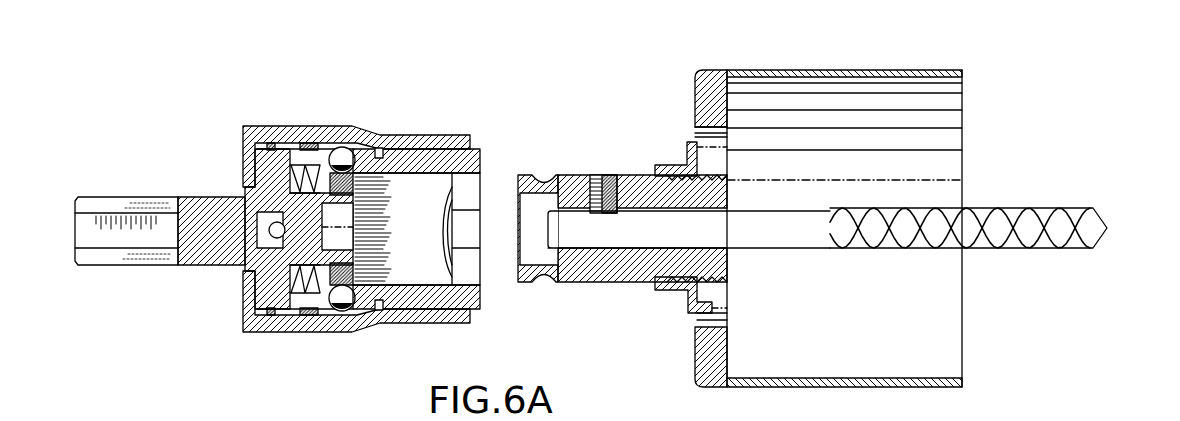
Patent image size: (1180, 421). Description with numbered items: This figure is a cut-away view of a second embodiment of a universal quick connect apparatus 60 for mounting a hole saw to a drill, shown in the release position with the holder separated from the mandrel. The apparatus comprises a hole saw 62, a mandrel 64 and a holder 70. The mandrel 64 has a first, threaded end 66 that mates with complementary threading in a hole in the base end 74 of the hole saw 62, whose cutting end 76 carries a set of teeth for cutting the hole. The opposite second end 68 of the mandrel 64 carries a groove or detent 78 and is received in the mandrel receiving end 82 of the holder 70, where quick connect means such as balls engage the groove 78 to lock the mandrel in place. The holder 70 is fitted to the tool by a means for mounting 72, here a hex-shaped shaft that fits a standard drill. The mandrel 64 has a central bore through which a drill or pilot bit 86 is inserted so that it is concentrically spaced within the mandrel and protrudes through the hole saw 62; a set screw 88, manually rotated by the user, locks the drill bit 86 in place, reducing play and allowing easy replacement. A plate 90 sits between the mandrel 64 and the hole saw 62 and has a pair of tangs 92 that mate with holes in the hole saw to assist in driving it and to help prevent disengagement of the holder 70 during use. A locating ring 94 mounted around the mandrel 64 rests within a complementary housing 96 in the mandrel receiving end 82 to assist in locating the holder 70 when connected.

The quick connect apparatus 60 is at (568, 93).
The hole saw 62 is at (828, 202).
The mandrel 64 is at (607, 270).
The first end 66 is at (727, 277).
The second end 68 is at (657, 203).
The holder 70 is at (315, 118).
The means for mounting 72 is at (108, 205).
The base end 74 is at (682, 115).
The cutting end 76 is at (975, 138).
The groove 78 is at (547, 177).
The mandrel receiving end 82 is at (478, 142).
The drill bit 86 is at (1088, 218).
The set screw 88 is at (607, 177).
The plate 90 is at (700, 313).
The tangs 92 is at (700, 150).
The locating ring 94 is at (680, 292).
The housing 96 is at (470, 282).